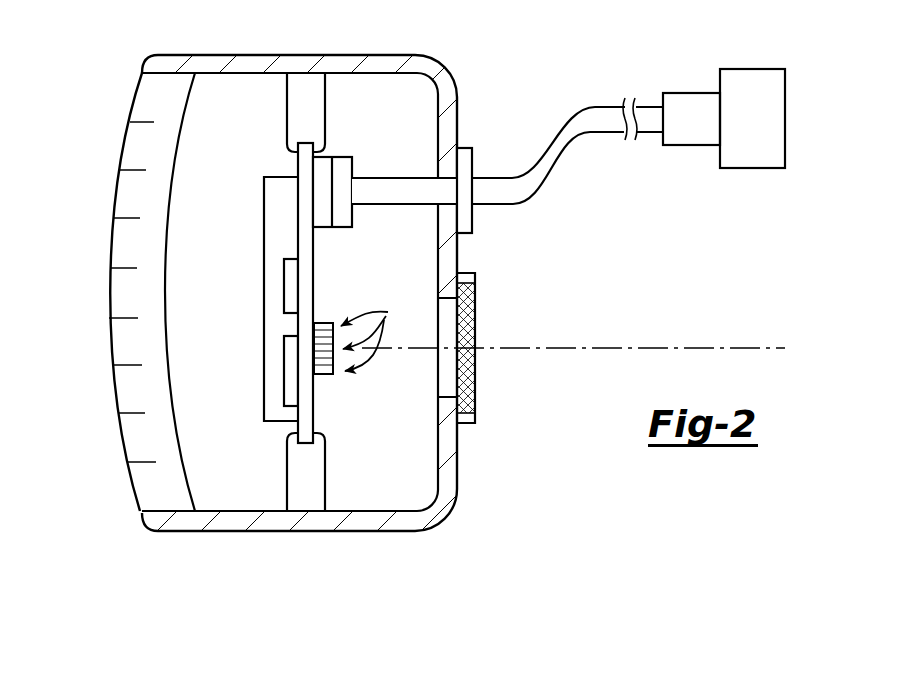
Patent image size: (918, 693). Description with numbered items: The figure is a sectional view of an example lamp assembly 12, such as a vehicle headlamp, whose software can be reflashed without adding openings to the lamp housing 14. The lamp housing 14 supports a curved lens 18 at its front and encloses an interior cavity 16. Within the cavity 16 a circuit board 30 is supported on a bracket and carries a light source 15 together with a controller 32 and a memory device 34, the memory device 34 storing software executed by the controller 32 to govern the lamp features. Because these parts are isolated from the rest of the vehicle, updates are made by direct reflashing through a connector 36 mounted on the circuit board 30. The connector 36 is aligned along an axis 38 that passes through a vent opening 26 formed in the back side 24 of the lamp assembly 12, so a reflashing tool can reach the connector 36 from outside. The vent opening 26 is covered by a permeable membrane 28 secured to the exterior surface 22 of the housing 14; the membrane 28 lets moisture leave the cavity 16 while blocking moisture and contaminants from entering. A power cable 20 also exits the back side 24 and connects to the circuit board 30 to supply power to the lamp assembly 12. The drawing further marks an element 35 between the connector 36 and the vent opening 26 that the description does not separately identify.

The lamp assembly 12 is at (486, 42).
The lamp housing 14 is at (228, 520).
The light source 15 is at (264, 218).
The interior cavity 16 is at (385, 112).
The lens 18 is at (144, 437).
The power cable 20 is at (649, 115).
The exterior surface 22 is at (461, 475).
The back side 24 is at (558, 236).
The vent opening 26 is at (446, 384).
The permeable membrane 28 is at (478, 307).
The circuit board 30 is at (298, 325).
The controller 32 is at (284, 370).
The memory device 34 is at (284, 287).
The light rays 35 is at (379, 332).
The connector 36 is at (322, 374).
The axis 38 is at (680, 348).